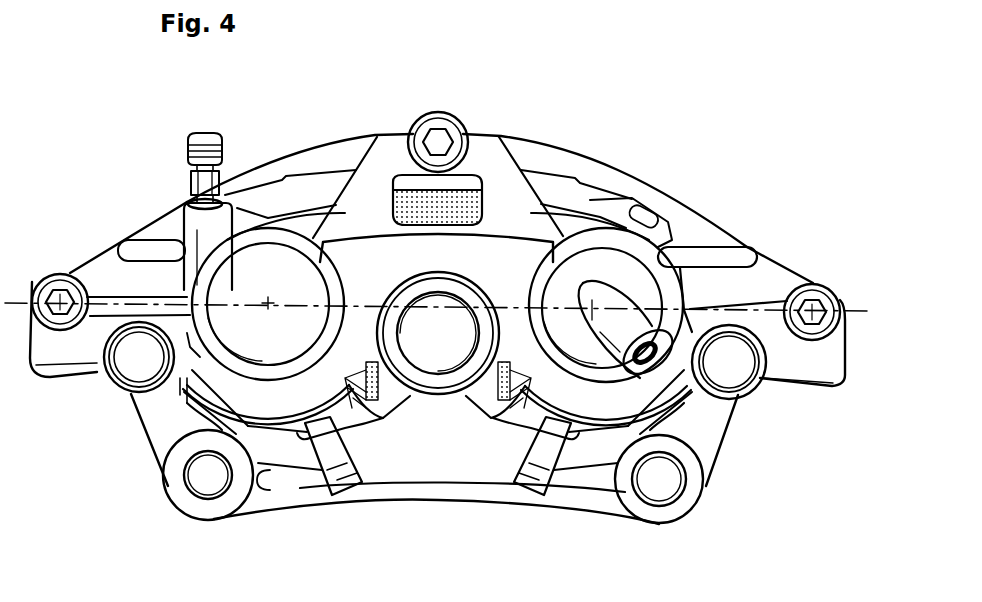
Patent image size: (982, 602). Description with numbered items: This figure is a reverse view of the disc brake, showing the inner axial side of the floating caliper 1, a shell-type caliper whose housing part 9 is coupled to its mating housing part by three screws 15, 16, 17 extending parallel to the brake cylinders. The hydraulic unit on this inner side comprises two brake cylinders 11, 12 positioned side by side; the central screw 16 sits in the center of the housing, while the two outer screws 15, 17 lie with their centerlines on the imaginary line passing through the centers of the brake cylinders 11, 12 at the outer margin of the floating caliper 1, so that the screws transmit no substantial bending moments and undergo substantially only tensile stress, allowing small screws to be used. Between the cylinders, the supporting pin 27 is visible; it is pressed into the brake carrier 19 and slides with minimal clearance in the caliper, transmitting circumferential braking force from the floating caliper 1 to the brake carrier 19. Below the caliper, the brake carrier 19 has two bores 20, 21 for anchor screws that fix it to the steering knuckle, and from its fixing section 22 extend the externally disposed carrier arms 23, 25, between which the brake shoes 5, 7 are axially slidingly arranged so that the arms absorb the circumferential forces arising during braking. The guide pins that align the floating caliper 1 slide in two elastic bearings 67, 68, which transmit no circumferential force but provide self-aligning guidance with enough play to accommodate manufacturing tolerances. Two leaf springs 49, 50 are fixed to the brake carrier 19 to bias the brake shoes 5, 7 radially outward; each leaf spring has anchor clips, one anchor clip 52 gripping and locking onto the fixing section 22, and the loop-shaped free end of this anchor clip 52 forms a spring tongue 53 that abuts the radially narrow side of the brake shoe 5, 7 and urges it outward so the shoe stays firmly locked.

The floating caliper 1 is at (634, 174).
The brake shoe 5 is at (263, 432).
The brake shoe 7 is at (602, 432).
The housing part 9 is at (750, 286).
The brake cylinder 11 is at (295, 270).
The brake cylinder 12 is at (582, 266).
The screw 15 is at (54, 290).
The screw 16 is at (439, 137).
The screw 17 is at (810, 305).
The brake carrier 19 is at (433, 503).
The bore 20 is at (197, 473).
The bore 21 is at (665, 488).
The fixing section 22 is at (466, 467).
The carrier arm 23 is at (157, 422).
The carrier arm 25 is at (710, 438).
The supporting pin 27 is at (395, 316).
The leaf spring 49 is at (354, 487).
The leaf spring 50 is at (522, 487).
The anchor clip 52 is at (546, 494).
The spring tongue 53 is at (504, 437).
The elastic bearing 67 is at (133, 367).
The elastic bearing 68 is at (736, 368).